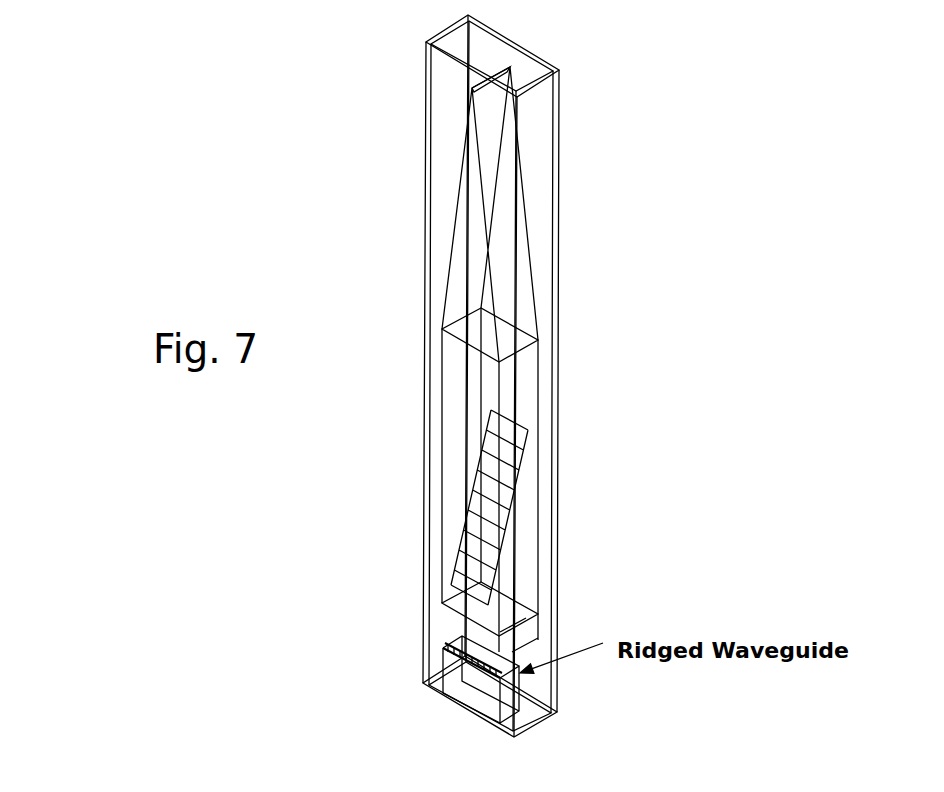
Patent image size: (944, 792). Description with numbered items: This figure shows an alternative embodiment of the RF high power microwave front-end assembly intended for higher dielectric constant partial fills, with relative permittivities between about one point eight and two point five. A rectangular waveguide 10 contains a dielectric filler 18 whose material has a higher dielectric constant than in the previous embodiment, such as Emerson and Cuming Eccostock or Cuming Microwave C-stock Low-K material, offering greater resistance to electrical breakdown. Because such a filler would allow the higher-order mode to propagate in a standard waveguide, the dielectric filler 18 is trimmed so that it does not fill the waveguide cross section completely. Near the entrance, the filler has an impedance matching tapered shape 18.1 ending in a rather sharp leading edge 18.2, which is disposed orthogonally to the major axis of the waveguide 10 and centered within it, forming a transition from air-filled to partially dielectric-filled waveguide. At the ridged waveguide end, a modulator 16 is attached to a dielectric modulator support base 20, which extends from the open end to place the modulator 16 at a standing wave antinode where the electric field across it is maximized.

The rectangular waveguide 10 is at (422, 93).
The tapered shape 18.1 is at (519, 195).
The leading edge 18.2 is at (497, 70).
The dielectric filler 18 is at (522, 385).
The modulator 16 is at (443, 648).
The modulator support base 20 is at (442, 690).